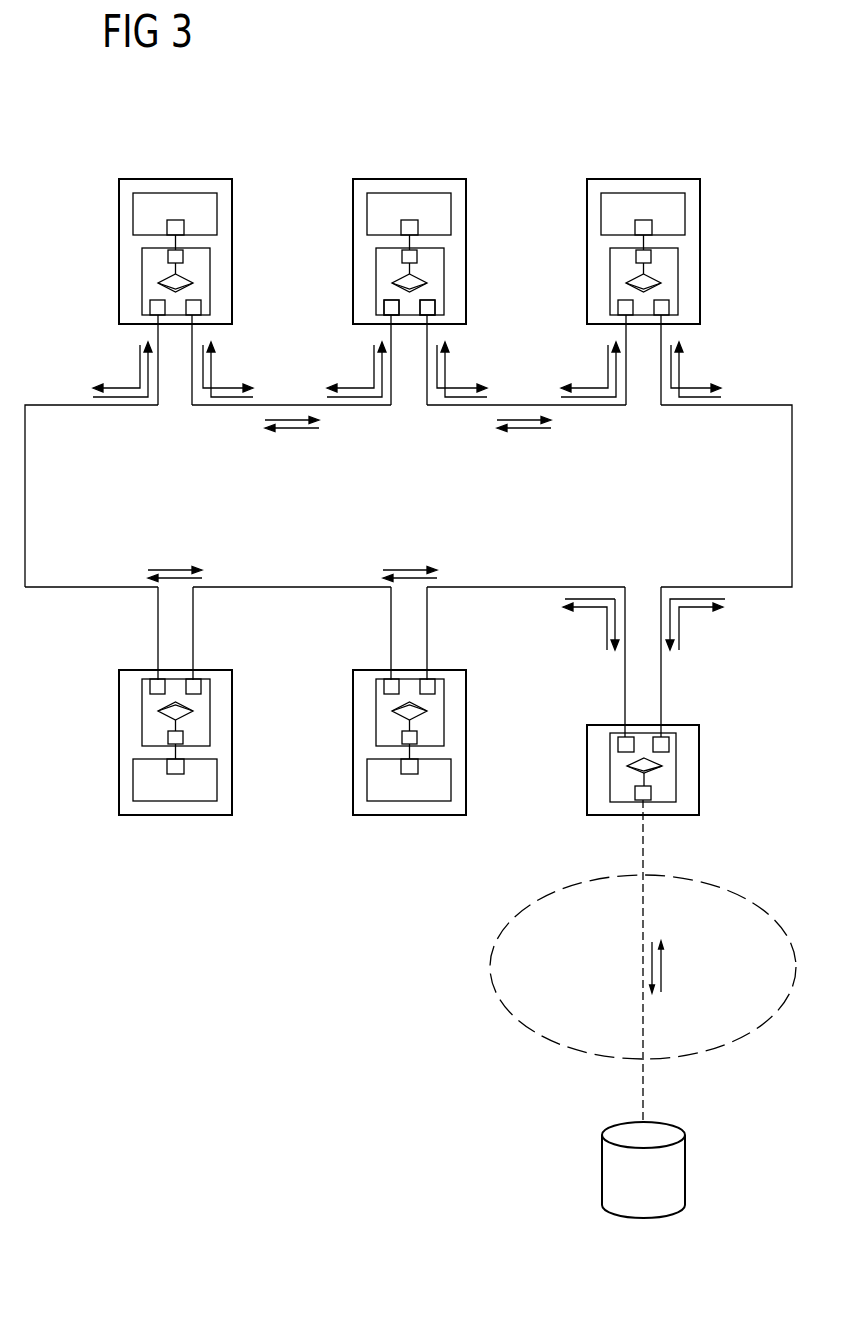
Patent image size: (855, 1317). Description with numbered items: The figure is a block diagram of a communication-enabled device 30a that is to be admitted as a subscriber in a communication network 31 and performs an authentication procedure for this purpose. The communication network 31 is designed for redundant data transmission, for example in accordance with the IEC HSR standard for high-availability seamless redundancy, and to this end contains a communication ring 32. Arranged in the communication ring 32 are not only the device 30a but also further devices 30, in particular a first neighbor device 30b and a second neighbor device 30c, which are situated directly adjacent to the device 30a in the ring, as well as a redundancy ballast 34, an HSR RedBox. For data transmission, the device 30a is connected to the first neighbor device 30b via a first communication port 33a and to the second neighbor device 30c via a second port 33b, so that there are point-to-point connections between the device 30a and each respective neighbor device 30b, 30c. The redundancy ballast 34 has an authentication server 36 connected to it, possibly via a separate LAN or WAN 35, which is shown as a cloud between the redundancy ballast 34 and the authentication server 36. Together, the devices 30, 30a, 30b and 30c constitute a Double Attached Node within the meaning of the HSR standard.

The further devices 30 is at (175, 815).
The communication-enabled device 30a is at (412, 179).
The first neighbor device 30b is at (178, 179).
The second neighbor device 30c is at (647, 179).
The communication network 31 is at (744, 100).
The communication ring 32 is at (25, 498).
The first communication port 33a is at (384, 306).
The second port 33b is at (435, 306).
The redundancy ballast 34 is at (699, 770).
The LAN or WAN 35 is at (497, 992).
The authentication server 36 is at (685, 1172).